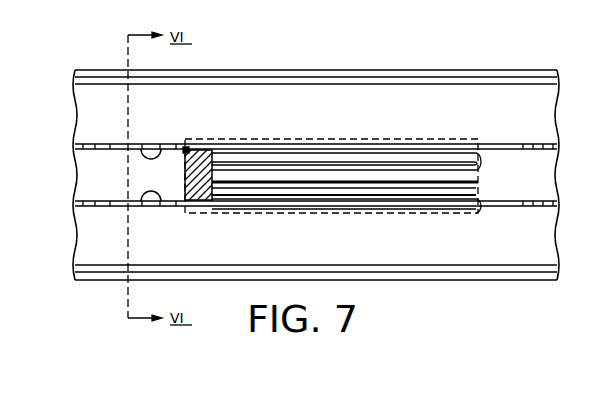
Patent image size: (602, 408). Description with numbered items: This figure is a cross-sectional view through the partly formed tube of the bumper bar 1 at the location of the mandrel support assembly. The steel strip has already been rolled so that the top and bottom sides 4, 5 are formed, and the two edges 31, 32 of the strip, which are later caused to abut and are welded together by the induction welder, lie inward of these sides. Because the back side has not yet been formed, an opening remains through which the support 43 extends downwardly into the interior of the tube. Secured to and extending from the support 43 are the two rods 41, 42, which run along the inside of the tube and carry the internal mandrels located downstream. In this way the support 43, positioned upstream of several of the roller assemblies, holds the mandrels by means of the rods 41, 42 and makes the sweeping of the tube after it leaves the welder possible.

The bumper bar 1 is at (398, 66).
The top side 4 is at (445, 255).
The bottom side 5 is at (447, 85).
The edge 31 is at (140, 204).
The edge 32 is at (142, 146).
The rod 41 is at (337, 162).
The rod 42 is at (335, 192).
The support 43 is at (185, 146).